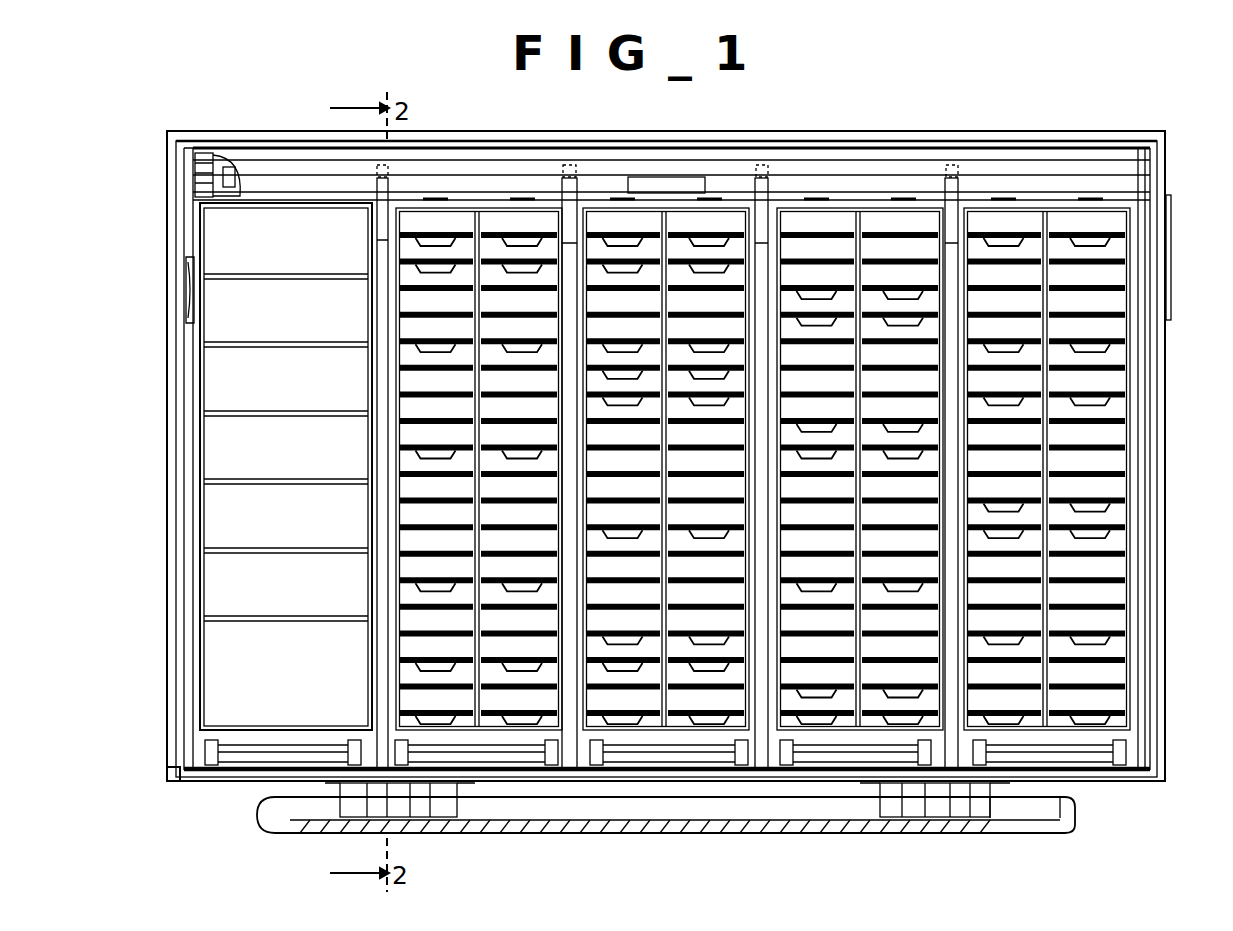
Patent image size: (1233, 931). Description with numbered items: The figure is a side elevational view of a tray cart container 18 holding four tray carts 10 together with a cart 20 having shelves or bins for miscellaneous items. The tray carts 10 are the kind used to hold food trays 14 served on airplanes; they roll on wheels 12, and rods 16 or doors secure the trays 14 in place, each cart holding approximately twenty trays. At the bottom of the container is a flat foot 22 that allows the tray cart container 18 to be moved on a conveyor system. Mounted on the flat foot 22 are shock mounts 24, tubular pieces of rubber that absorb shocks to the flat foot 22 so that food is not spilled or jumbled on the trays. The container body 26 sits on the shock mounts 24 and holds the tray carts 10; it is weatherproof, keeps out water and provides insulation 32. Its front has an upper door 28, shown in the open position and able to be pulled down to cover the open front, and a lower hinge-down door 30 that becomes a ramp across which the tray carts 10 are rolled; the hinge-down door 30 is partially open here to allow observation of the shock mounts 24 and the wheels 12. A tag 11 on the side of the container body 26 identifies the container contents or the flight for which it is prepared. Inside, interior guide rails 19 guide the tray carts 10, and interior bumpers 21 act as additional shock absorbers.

The tray cart 10 is at (603, 205).
The tag 11 is at (1170, 256).
The wheels 12 is at (735, 768).
The food trays 14 is at (1103, 392).
The rods 16 is at (1050, 303).
The tray cart container 18 is at (900, 118).
The interior guide rails 19 is at (764, 205).
The cart 20 is at (198, 246).
The interior bumpers 21 is at (186, 299).
The flat foot 22 is at (256, 808).
The shock mounts 24 is at (370, 812).
The container body 26 is at (1093, 133).
The upper door 28 is at (274, 162).
The hinge-down door 30 is at (205, 771).
The insulation 32 is at (725, 143).